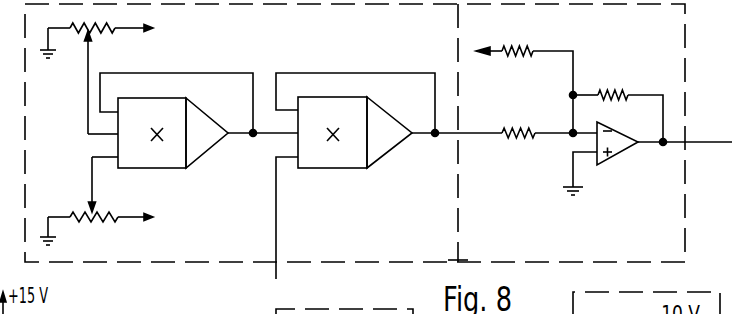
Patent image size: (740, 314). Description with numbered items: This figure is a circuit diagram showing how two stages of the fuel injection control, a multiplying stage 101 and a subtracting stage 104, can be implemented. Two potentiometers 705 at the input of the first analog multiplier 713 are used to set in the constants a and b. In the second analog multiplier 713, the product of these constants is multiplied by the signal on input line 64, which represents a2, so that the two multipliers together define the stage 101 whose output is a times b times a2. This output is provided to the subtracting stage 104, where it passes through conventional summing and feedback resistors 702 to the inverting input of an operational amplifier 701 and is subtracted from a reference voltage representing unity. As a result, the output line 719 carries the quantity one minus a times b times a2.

The potentiometer 705 is at (100, 33).
The analog multiplier 713 is at (142, 159).
The input line 64 is at (273, 266).
The summing and feedback resistor 702 is at (513, 56).
The operational amplifier 701 is at (617, 156).
The output line 719 is at (708, 140).
The stage 101 is at (403, 250).
The subtracting stage 104 is at (541, 250).